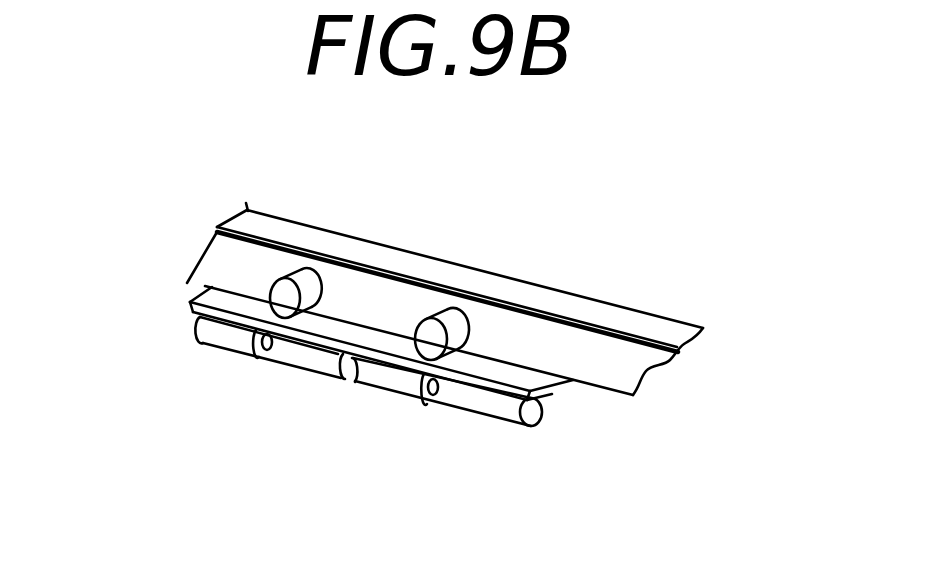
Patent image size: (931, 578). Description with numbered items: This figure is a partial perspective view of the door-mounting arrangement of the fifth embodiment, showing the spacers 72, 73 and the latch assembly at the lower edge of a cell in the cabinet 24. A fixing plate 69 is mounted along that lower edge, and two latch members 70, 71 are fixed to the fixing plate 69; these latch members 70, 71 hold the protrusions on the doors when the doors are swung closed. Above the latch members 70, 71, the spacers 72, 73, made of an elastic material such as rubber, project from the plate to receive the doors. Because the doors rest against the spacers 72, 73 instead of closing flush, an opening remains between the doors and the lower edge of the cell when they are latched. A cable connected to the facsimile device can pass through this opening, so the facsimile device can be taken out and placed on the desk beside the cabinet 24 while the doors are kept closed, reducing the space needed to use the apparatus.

The cabinet 24 is at (630, 372).
The fixing plate 69 is at (209, 288).
The latch member 70 is at (510, 443).
The latch member 71 is at (182, 347).
The spacer 72 is at (452, 312).
The spacer 73 is at (305, 272).